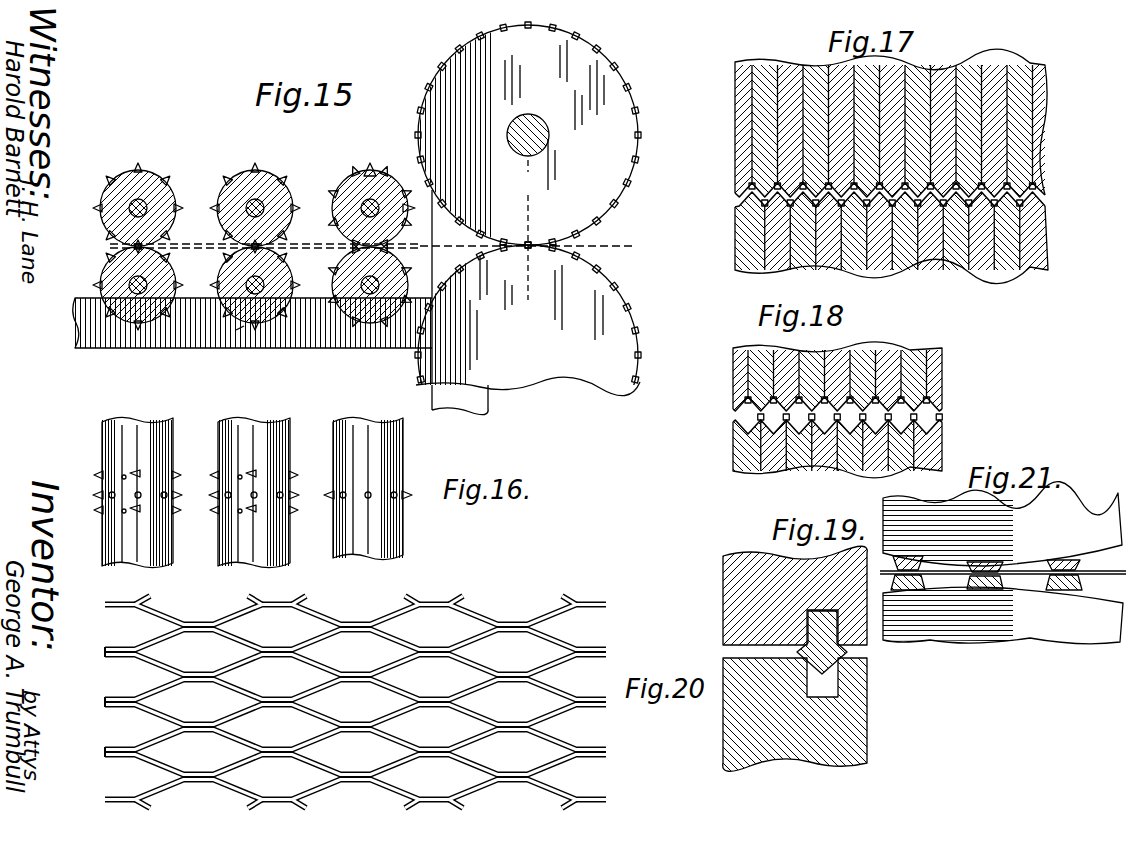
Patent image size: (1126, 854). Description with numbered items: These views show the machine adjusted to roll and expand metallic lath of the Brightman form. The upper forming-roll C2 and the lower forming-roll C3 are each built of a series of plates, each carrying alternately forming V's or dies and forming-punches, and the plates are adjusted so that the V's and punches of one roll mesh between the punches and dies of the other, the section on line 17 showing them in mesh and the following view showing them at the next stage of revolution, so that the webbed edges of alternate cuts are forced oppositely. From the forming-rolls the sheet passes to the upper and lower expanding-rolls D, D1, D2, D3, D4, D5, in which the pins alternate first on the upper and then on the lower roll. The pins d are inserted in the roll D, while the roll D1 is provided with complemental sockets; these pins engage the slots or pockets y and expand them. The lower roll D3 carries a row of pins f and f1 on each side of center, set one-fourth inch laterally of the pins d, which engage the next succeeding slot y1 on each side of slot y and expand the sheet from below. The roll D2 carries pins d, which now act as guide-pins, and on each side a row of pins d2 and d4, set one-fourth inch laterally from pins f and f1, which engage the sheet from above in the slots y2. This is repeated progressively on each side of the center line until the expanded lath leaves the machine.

In FIG. 15, the upper expanding-roll D4 is at (158, 174).
In FIG. 16, the upper expanding-roll D4 is at (166, 441).
In FIG. 15, the upper expanding-roll D2 is at (283, 185).
In FIG. 16, the upper expanding-roll D2 is at (281, 446).
In FIG. 15, the expanding-roll D is at (380, 174).
In FIG. 16, the expanding-roll D is at (400, 463).
In FIG. 19, the expanding-roll D is at (727, 558).
In FIG. 15, the expanding-pins d is at (372, 173).
In FIG. 16, the expanding-pins d is at (407, 493).
In FIG. 19, the expanding-pins d is at (840, 668).
In FIG. 15, the lower expanding-roll D5 is at (147, 322).
In FIG. 15, the lower expanding-roll D3 is at (262, 318).
In FIG. 15, the lower expanding-roll D1 is at (375, 347).
In FIG. 19, the lower expanding-roll D1 is at (858, 727).
In FIG. 15, the expanding-pins f is at (252, 346).
In FIG. 15, the expanding-pins f1 is at (240, 332).
In FIG. 15, the upper forming-roll C2 is at (610, 95).
In FIG. 17, the upper forming-roll C2 is at (972, 82).
In FIG. 18, the upper forming-roll C2 is at (894, 348).
In FIG. 21, the upper forming-roll C2 is at (1002, 527).
In FIG. 15, the lower forming-roll C3 is at (592, 298).
In FIG. 17, the lower forming-roll C3 is at (971, 270).
In FIG. 21, the lower forming-roll C3 is at (1010, 612).
In FIG. 15, the section line 17 is at (531, 241).
In FIG. 16, the expanding-pins d2 is at (287, 482).
In FIG. 16, the expanding-pins d4 is at (290, 506).
In FIG. 20, the slot or pocket y is at (355, 702).
In FIG. 20, the slots y2 is at (355, 702).
In FIG. 20, the slot y1 is at (114, 702).